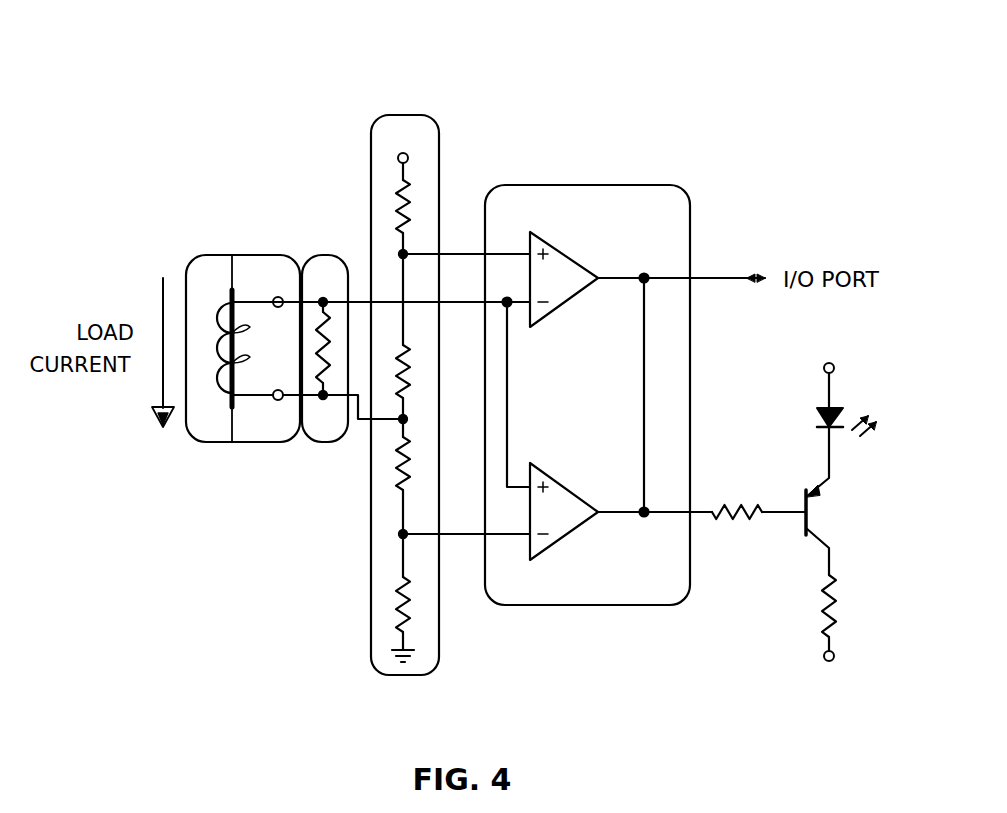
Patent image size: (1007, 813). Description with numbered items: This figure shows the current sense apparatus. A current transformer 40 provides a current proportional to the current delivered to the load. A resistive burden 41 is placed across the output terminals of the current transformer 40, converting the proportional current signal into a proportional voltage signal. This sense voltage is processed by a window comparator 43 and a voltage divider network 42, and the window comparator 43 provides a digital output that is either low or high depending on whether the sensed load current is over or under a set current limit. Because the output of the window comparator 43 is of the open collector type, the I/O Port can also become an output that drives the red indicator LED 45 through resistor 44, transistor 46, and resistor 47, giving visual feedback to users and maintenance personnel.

The current transformer 40 is at (218, 255).
The resistive burden 41 is at (322, 255).
The voltage divider network 42 is at (403, 115).
The window comparator 43 is at (553, 185).
The resistor 44 is at (740, 500).
The red indicator LED 45 is at (817, 420).
The transistor 46 is at (810, 520).
The resistor 47 is at (818, 605).